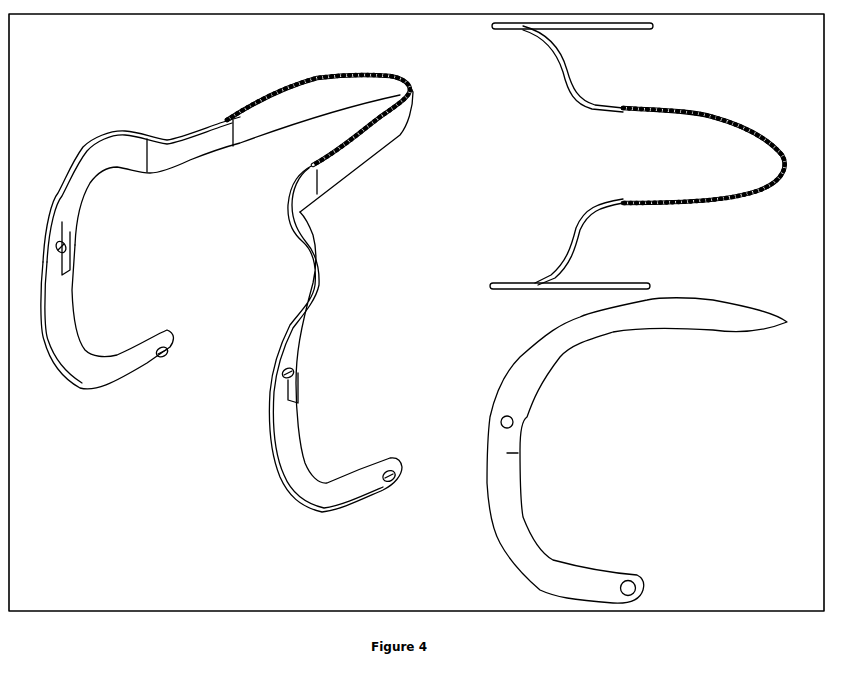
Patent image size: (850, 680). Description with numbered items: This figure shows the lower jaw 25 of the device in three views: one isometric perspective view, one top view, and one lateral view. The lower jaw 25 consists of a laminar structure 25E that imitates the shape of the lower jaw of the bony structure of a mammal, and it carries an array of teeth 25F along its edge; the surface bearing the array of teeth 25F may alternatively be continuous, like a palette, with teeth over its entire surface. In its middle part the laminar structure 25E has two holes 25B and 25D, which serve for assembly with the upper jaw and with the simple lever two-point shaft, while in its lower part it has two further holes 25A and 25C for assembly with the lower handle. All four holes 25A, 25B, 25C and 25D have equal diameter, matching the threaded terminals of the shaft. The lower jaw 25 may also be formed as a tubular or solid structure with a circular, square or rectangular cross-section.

The lower jaw 25 is at (410, 46).
The hole 25A is at (402, 483).
The hole 25B is at (300, 363).
The hole 25C is at (173, 362).
The hole 25D is at (70, 248).
The laminar structure 25E is at (383, 130).
The array of teeth 25F is at (293, 80).